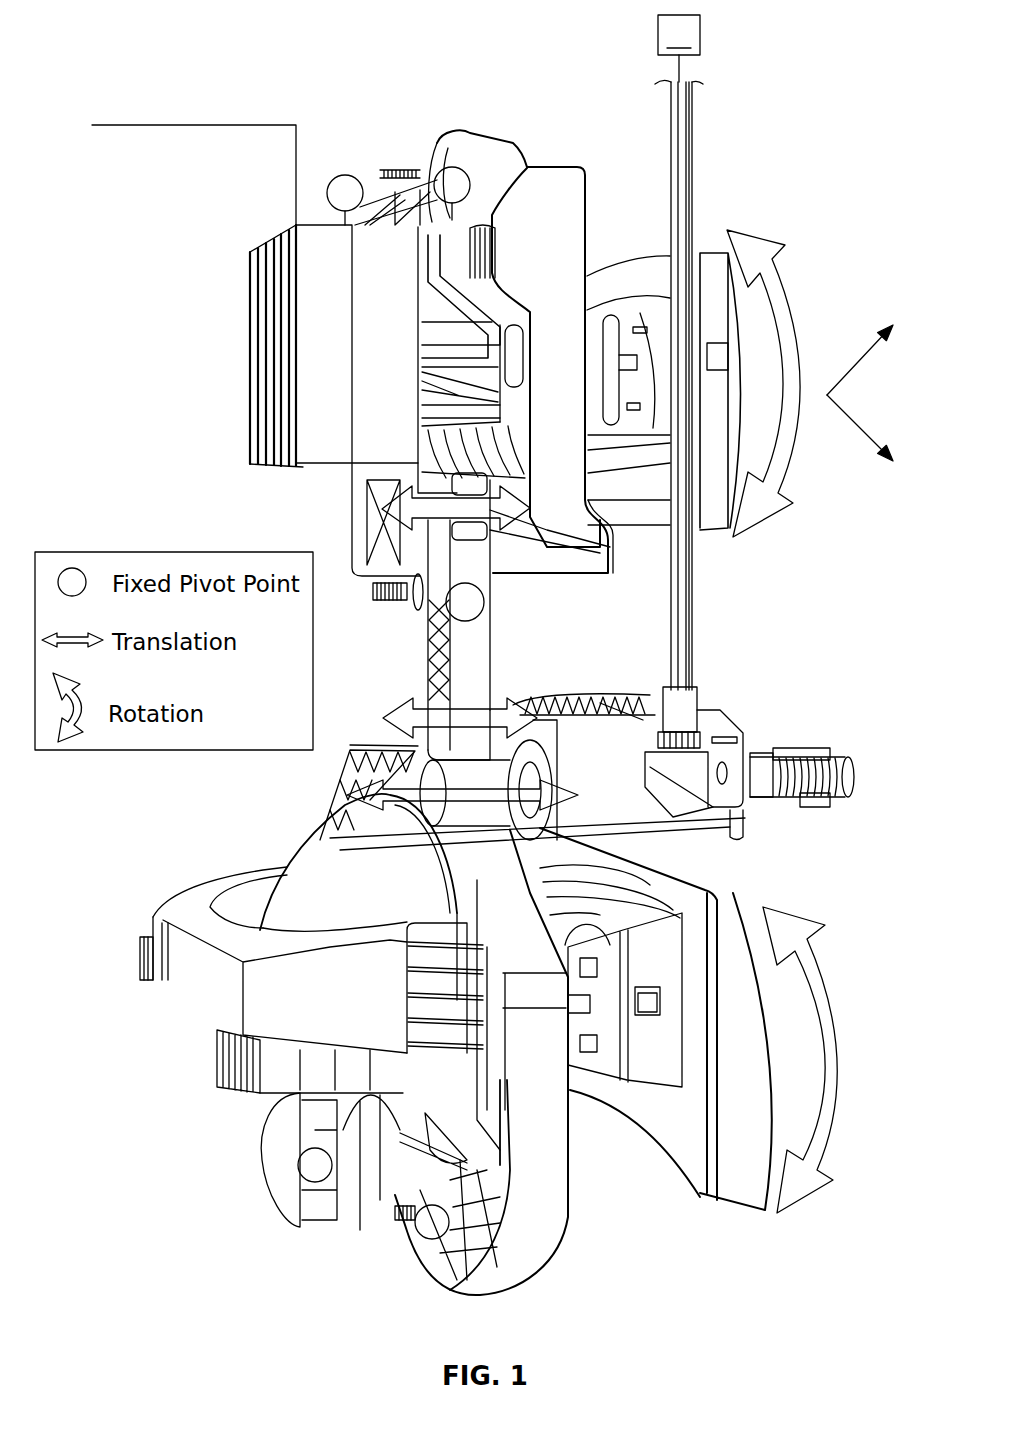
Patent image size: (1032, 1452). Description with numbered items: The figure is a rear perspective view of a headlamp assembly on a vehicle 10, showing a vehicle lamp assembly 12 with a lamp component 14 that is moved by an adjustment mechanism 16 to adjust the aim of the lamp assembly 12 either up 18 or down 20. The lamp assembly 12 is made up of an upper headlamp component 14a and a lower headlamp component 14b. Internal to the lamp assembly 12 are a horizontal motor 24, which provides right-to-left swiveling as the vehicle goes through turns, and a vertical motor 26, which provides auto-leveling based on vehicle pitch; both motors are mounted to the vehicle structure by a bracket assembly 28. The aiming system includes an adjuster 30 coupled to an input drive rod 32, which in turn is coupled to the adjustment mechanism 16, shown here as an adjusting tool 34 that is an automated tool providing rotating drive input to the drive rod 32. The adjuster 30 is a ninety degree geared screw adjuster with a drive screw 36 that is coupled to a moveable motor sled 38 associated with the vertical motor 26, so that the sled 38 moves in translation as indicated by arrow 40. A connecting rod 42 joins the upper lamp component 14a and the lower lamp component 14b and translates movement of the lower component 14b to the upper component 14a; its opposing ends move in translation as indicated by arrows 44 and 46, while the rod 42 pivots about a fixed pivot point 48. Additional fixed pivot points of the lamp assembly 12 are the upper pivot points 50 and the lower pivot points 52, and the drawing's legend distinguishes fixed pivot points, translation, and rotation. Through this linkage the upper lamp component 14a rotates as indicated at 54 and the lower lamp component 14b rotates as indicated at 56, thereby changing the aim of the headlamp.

The vehicle 10 is at (165, 122).
The vehicle lamp assembly 12 is at (826, 235).
The lamp component 14 is at (847, 952).
The upper headlamp component 14a is at (703, 252).
The lower headlamp component 14b is at (722, 890).
The adjustment mechanism 16 is at (798, 58).
The up direction 18 is at (860, 357).
The down direction 20 is at (862, 432).
The horizontal motor 24 is at (337, 1197).
The vertical motor 26 is at (580, 702).
The bracket assembly 28 is at (578, 170).
The adjuster 30 is at (740, 820).
The input drive rod 32 is at (695, 112).
The adjusting tool 34 is at (679, 48).
The drive screw 36 is at (853, 770).
The moveable motor sled 38 is at (605, 700).
The translation arrow 40 is at (327, 819).
The connecting rod 42 is at (428, 660).
The translation arrow 44 is at (365, 498).
The translation arrow 46 is at (385, 720).
The fixed pivot point 48 is at (470, 610).
The upper pivot points 50 is at (450, 168).
The lower pivot points 52 is at (310, 1175).
The rotation arrow 54 is at (792, 335).
The rotation arrow 56 is at (822, 1117).